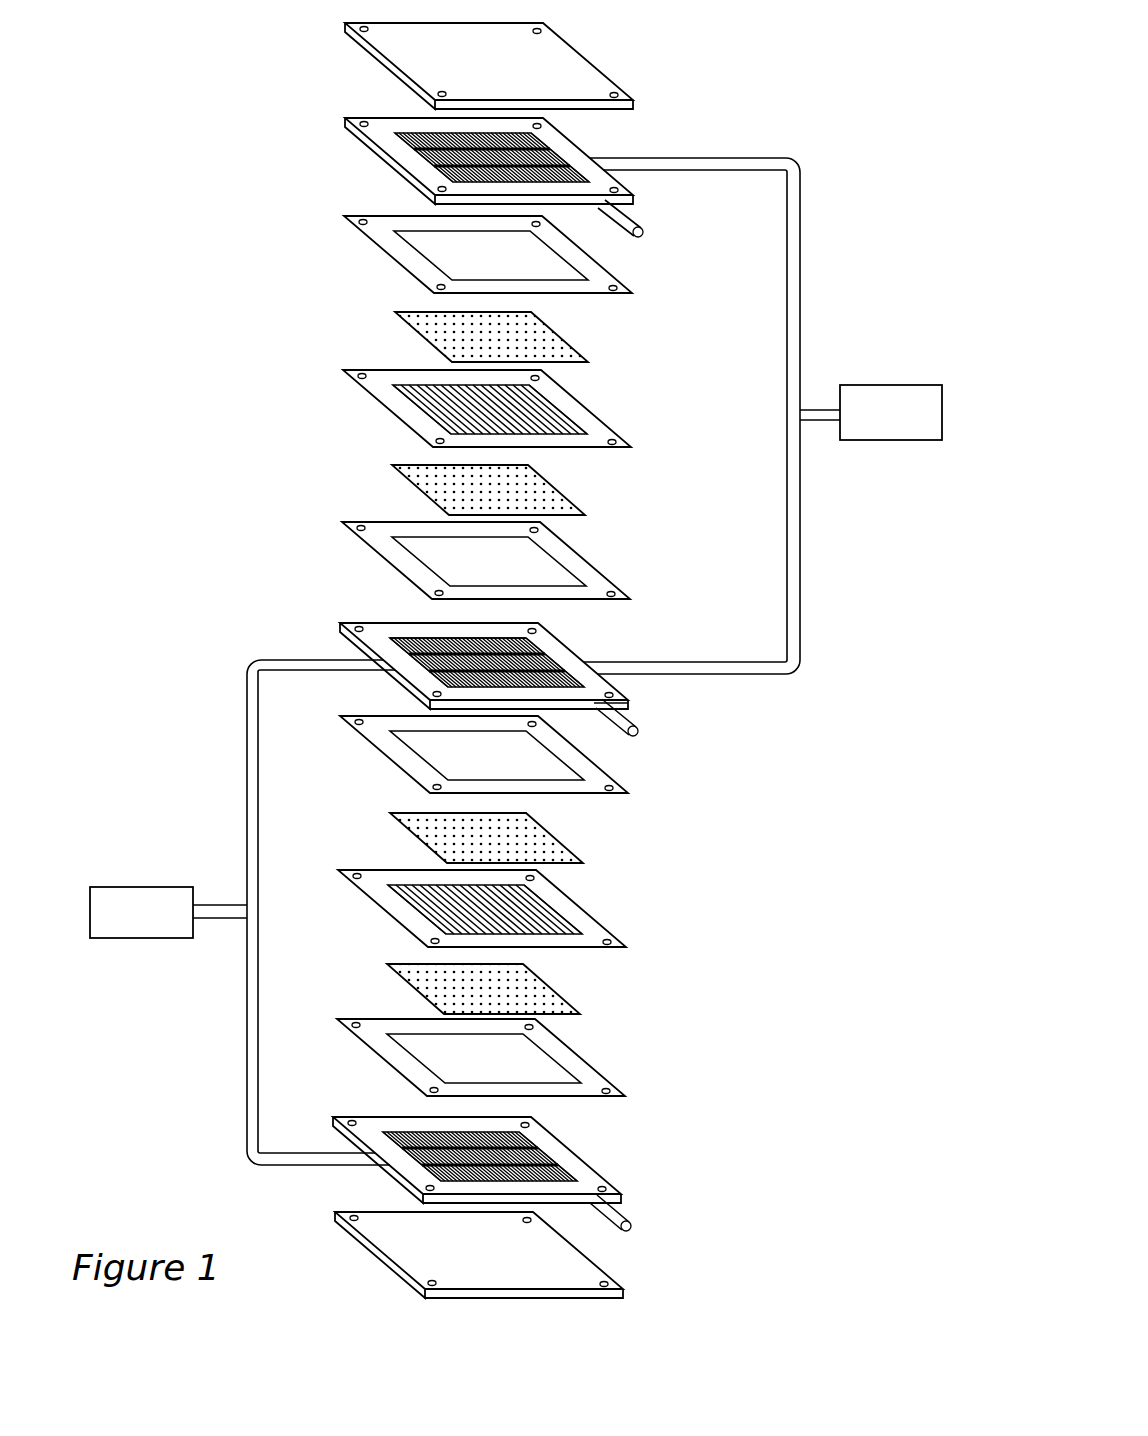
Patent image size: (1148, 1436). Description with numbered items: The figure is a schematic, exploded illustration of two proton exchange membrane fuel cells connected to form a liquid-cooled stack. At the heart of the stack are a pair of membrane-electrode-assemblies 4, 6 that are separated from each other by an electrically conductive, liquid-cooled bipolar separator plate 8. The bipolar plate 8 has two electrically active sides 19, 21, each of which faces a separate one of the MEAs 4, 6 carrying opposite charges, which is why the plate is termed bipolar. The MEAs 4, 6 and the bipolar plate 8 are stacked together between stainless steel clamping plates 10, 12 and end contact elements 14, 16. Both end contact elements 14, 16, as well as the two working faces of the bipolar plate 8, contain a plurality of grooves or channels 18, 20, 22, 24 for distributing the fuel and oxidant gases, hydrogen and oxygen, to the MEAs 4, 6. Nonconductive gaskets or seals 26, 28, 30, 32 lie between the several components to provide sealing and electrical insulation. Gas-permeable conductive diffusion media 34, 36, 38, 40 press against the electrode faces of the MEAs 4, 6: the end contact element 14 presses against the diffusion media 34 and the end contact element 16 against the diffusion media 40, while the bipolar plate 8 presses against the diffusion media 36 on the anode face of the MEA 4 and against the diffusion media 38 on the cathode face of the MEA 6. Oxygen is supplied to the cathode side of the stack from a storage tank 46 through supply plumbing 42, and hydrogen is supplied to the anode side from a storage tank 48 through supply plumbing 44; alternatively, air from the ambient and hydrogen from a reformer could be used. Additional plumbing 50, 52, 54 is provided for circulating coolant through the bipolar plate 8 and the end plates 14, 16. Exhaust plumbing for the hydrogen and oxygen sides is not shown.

The membrane-electrode-assembly 4 is at (385, 408).
The membrane-electrode-assembly 6 is at (594, 915).
The bipolar separator plate 8 is at (461, 663).
The clamping plate 10 is at (383, 60).
The clamping plate 12 is at (606, 1272).
The end contact element 14 is at (489, 146).
The end contact element 16 is at (537, 1149).
The grooves or channels 18 is at (545, 158).
The electrically active side 19 is at (550, 633).
The grooves or channels 20 is at (415, 633).
The electrically active side 21 is at (425, 700).
The grooves or channels 22 is at (580, 713).
The grooves or channels 24 is at (548, 1150).
The gasket or seal 26 is at (381, 247).
The gasket or seal 28 is at (385, 558).
The gasket or seal 30 is at (620, 790).
The gasket or seal 32 is at (580, 1060).
The diffusion media 34 is at (410, 326).
The diffusion media 36 is at (410, 480).
The diffusion media 38 is at (562, 843).
The diffusion media 40 is at (556, 990).
The supply plumbing 42 is at (800, 578).
The supply plumbing 44 is at (253, 703).
The storage tank 46 is at (888, 385).
The storage tank 48 is at (112, 887).
The plumbing 50 is at (645, 222).
The plumbing 52 is at (637, 723).
The plumbing 54 is at (633, 1215).